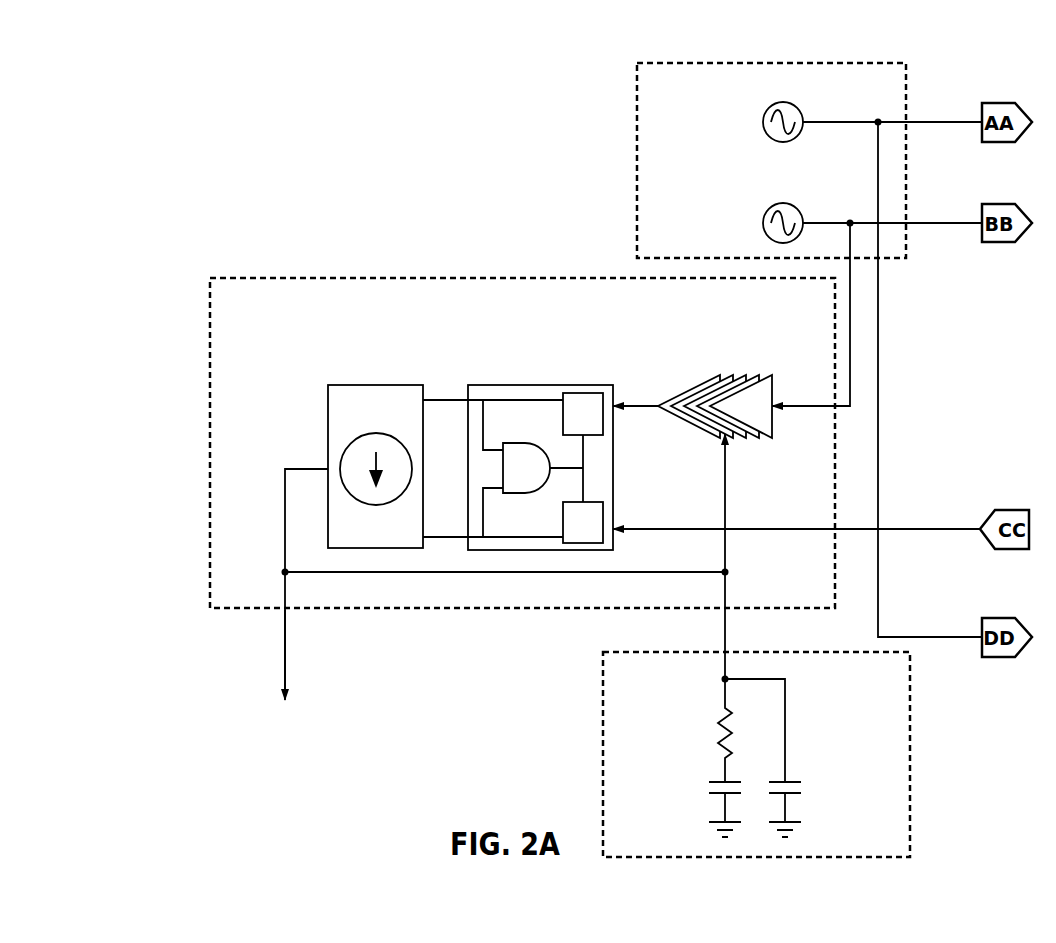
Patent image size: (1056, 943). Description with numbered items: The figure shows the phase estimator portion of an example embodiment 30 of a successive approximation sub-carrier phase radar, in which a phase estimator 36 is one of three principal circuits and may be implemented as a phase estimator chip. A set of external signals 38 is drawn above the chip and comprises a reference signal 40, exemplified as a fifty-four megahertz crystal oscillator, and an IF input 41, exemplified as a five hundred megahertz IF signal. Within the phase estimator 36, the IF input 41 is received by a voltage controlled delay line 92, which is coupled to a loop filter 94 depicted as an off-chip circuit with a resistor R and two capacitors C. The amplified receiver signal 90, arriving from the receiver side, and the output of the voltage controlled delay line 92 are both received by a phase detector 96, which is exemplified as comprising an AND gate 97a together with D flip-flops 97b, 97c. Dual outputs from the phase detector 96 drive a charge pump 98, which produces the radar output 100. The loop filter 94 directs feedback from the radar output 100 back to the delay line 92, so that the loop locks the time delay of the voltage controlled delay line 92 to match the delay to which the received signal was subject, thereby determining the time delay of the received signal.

The successive approximation sub-carrier phase radar 30 is at (188, 70).
The phase estimator 36 is at (210, 346).
The set of external signals 38 is at (637, 100).
The reference signal 40 is at (787, 103).
The IF input 41 is at (787, 204).
The amplified receiver signal 90 is at (905, 530).
The voltage controlled delay line 92 is at (761, 438).
The loop filter 94 is at (603, 707).
The phase detector 96 is at (574, 460).
The AND gate 97a is at (518, 495).
The D flip-flop 97b is at (595, 437).
The D flip-flop 97c is at (604, 509).
The charge pump 98 is at (328, 420).
The radar output 100 is at (284, 645).